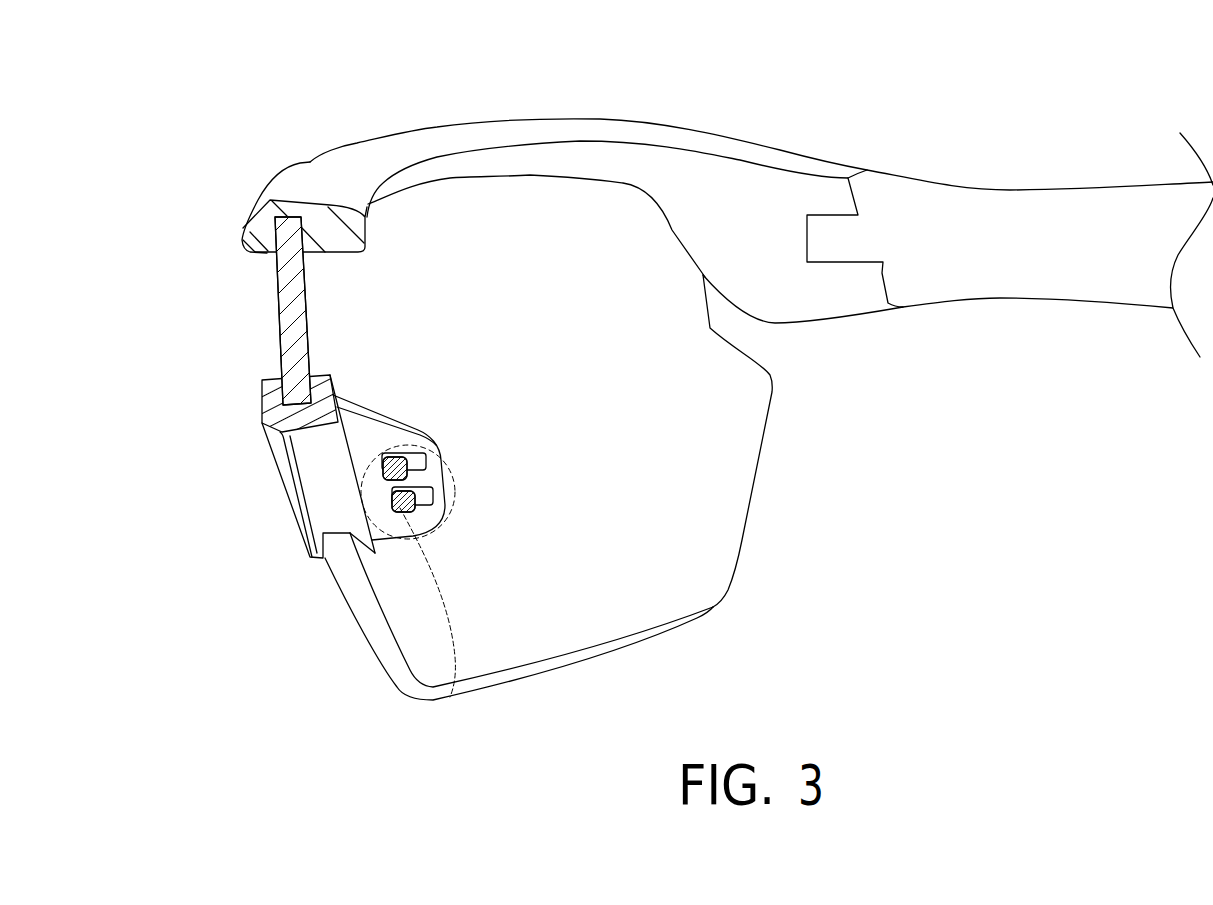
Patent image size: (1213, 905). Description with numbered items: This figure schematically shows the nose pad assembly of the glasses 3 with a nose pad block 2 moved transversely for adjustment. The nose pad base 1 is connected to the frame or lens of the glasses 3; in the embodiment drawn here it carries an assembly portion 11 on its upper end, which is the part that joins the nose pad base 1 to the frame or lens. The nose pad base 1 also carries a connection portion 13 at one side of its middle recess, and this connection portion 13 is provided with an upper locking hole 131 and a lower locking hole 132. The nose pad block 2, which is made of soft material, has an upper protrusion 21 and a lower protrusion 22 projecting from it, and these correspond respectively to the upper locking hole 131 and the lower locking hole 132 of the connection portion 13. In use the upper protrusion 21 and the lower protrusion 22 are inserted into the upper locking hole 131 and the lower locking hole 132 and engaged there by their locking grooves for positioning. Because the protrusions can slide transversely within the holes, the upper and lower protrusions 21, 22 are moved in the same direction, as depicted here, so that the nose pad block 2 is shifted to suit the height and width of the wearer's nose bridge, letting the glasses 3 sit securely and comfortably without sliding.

The nose pad base 1 is at (265, 407).
The assembly portion 11 is at (303, 408).
The connection portion 13 is at (353, 433).
The upper locking hole 131 is at (425, 462).
The lower locking hole 132 is at (428, 495).
The nose pad block 2 is at (448, 687).
The upper protrusion 21 is at (380, 473).
The lower protrusion 22 is at (400, 513).
The glasses 3 is at (309, 175).